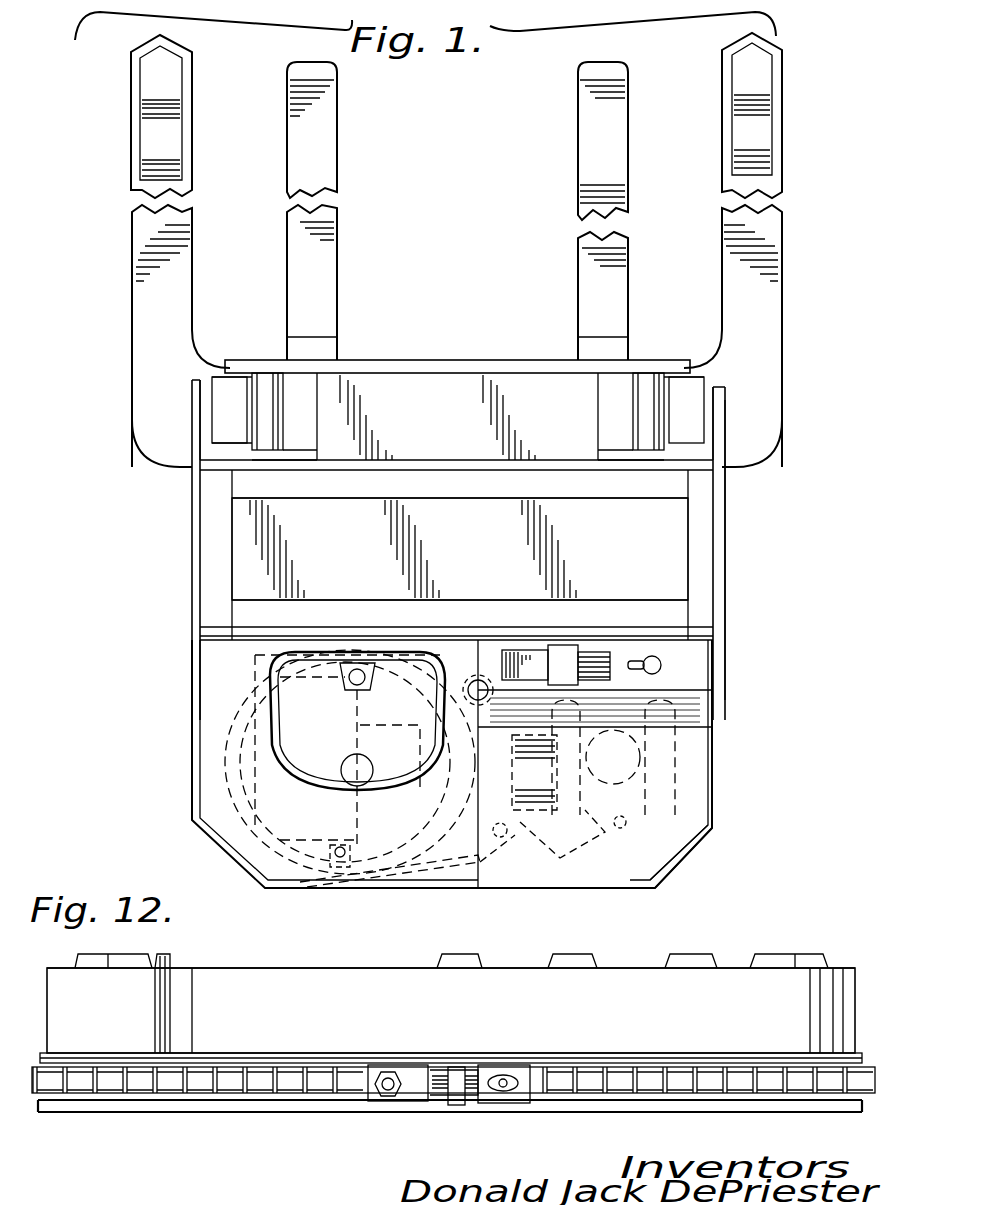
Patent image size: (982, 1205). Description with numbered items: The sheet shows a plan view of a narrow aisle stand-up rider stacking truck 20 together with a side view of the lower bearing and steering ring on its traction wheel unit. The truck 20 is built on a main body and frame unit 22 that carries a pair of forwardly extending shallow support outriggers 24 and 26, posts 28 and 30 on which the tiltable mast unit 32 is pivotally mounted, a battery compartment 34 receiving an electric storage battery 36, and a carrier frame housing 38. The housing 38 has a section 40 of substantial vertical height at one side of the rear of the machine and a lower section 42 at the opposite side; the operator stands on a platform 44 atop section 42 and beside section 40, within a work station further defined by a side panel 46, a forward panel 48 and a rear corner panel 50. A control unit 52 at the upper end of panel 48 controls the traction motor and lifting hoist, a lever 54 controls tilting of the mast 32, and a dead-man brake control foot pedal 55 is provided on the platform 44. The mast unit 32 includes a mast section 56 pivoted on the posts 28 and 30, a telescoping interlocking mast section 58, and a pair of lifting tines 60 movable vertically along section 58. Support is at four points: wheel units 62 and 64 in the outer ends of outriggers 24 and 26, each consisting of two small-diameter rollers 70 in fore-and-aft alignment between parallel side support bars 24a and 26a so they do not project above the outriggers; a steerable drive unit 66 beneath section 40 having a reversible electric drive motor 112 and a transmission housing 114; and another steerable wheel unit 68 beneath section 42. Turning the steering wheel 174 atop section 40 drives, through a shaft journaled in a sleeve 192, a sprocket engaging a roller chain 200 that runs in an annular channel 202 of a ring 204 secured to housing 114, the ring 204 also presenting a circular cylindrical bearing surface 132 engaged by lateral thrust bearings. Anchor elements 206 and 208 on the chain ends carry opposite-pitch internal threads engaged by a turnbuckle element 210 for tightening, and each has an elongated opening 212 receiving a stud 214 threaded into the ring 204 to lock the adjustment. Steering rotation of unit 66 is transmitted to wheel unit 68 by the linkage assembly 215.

In FIG. 1, the truck 20 is at (745, 526).
In FIG. 1, the main body and frame unit 22 is at (784, 448).
In FIG. 1, the support outrigger 24 is at (132, 222).
In FIG. 1, the side support bar 24a is at (131, 74).
In FIG. 1, the support outrigger 26 is at (783, 222).
In FIG. 1, the side support bar 26a is at (722, 62).
In FIG. 1, the post 28 is at (215, 425).
In FIG. 1, the post 30 is at (702, 405).
In FIG. 1, the mast unit 32 is at (422, 364).
In FIG. 1, the battery compartment 34 is at (215, 503).
In FIG. 1, the electric storage battery 36 is at (250, 550).
In FIG. 1, the carrier frame housing 38 is at (197, 740).
In FIG. 1, the housing section 40 is at (195, 798).
In FIG. 1, the lower section 42 is at (604, 882).
In FIG. 1, the platform 44 is at (622, 878).
In FIG. 1, the side panel 46 is at (720, 778).
In FIG. 1, the forward panel 48 is at (690, 728).
In FIG. 1, the rear corner panel 50 is at (692, 845).
In FIG. 1, the control unit 52 is at (562, 646).
In FIG. 1, the lever 54 is at (652, 655).
In FIG. 1, the dead-man brake control foot pedal 55 is at (520, 795).
In FIG. 1, the mast section 56 is at (258, 388).
In FIG. 1, the telescoping interlocking mast section 58 is at (302, 398).
In FIG. 1, the lifting tine 60 is at (338, 140).
In FIG. 1, the wheel unit 62 is at (196, 122).
In FIG. 1, the wheel unit 64 is at (718, 77).
In FIG. 1, the steerable drive unit 66 is at (298, 840).
In FIG. 1, the steerable wheel unit 68 is at (676, 788).
In FIG. 1, the roller 70 is at (150, 130).
In FIG. 1, the reversible electric drive motor 112 is at (372, 796).
In FIG. 1, the transmission housing 114 is at (262, 765).
In FIG. 12, the circular cylindrical bearing surface 132 is at (315, 995).
In FIG. 1, the steering wheel 174 is at (395, 652).
In FIG. 1, the sleeve 192 is at (480, 678).
In FIG. 1, the roller chain 200 is at (318, 872).
In FIG. 12, the roller chain 200 is at (640, 1100).
In FIG. 12, the annular channel 202 is at (38, 1100).
In FIG. 12, the ring 204 is at (50, 994).
In FIG. 12, the anchor element 206 is at (425, 1075).
In FIG. 12, the anchor element 208 is at (508, 1105).
In FIG. 12, the turnbuckle element 210 is at (455, 1100).
In FIG. 12, the elongated opening 212 is at (400, 1100).
In FIG. 12, the stud 214 is at (390, 1072).
In FIG. 1, the linkage assembly 215 is at (537, 848).